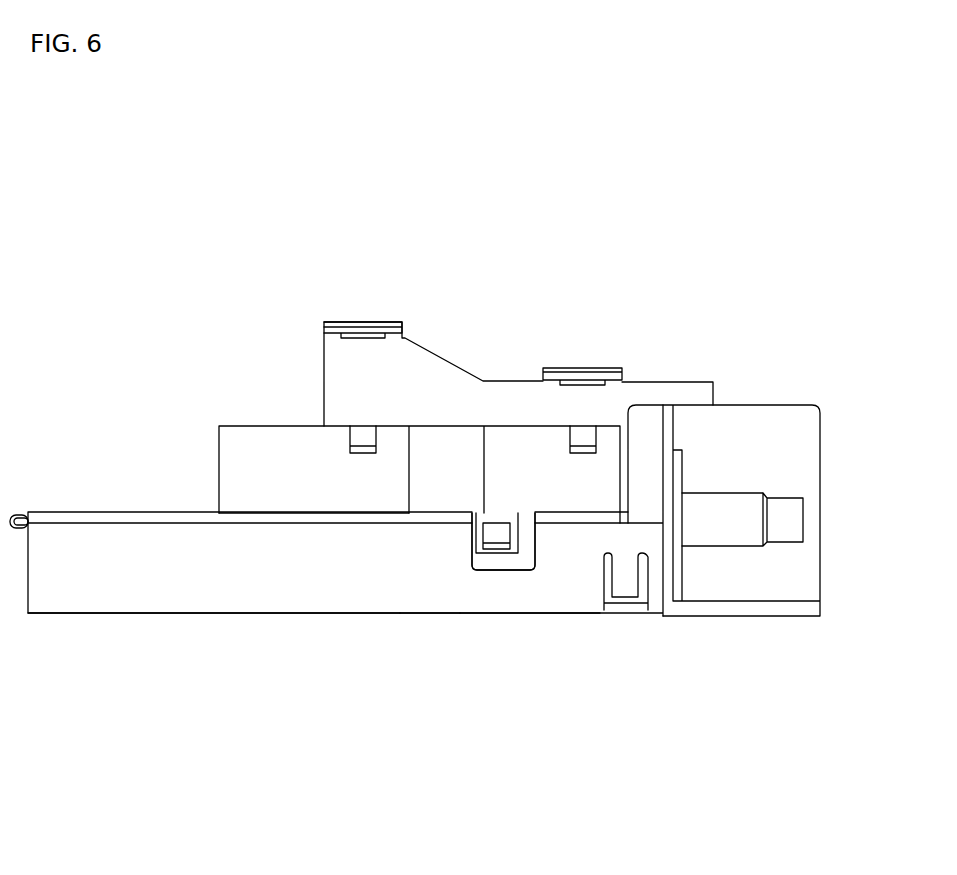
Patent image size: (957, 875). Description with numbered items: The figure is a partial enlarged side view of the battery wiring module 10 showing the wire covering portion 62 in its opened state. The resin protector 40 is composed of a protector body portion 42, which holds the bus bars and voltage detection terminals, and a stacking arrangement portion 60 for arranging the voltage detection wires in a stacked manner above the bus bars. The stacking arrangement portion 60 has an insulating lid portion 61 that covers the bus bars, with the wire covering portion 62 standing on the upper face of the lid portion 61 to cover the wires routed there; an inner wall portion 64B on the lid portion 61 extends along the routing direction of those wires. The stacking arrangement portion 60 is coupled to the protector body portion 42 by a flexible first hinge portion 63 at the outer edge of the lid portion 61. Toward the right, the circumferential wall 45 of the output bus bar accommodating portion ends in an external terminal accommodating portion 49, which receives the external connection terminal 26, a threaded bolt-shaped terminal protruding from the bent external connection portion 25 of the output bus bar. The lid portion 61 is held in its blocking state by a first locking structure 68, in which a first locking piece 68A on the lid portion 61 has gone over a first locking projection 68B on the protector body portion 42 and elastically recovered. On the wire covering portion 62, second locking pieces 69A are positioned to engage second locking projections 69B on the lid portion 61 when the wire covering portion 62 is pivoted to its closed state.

The connector 10 is at (295, 188).
The external connection portion 25 is at (678, 559).
The external connection terminal 26 is at (787, 525).
The resin protector 40 is at (367, 598).
The protector body portion 42 is at (428, 598).
The circumferential wall 45 is at (498, 595).
The external terminal accommodating portion 49 is at (807, 447).
The stacking arrangement portion 60 is at (237, 438).
The lid portion 61 is at (120, 517).
The wire covering portion 62 is at (437, 375).
The first hinge portion 63 is at (3, 527).
The inner wall portion 64B is at (276, 482).
The first locking structure 68 is at (638, 702).
The first locking piece 68A is at (527, 557).
The first locking projection 68B is at (499, 547).
The second locking piece 69A is at (359, 328).
The second locking projection 69B is at (362, 437).